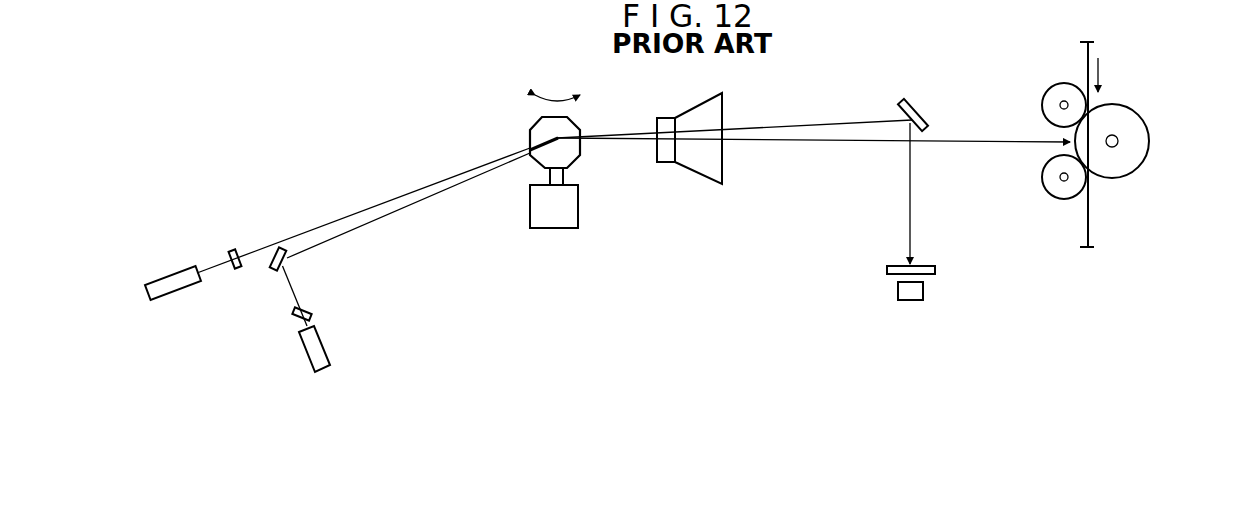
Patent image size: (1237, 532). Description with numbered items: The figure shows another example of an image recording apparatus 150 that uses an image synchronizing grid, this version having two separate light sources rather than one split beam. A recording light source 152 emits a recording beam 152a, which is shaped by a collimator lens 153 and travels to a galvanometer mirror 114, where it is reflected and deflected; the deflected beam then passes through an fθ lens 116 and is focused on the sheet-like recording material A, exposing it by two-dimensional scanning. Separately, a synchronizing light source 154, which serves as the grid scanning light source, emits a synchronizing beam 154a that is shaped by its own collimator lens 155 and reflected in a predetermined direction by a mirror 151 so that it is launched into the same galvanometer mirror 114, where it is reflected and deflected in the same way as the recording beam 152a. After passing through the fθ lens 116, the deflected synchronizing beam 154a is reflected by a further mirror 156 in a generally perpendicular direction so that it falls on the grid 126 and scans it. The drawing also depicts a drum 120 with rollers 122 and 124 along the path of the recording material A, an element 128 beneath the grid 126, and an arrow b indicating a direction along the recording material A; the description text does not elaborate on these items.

The galvanometer mirror 114 is at (540, 130).
The fθ lens 116 is at (723, 105).
The drum 120 is at (1130, 160).
The feed roller 122 is at (1058, 91).
The feed roller 124 is at (1055, 193).
The grid 126 is at (937, 270).
The detector 128 is at (913, 293).
The image recording apparatus 150 is at (698, 208).
The mirror 151 is at (276, 273).
The recording light source 152 is at (174, 272).
The recording beam 152a is at (315, 228).
The collimator lens 153 is at (237, 270).
The synchronizing light source 154 is at (308, 368).
The synchronizing beam 154a is at (327, 241).
The collimator lens 155 is at (312, 311).
The mirror 156 is at (918, 112).
The sheet-like recording material A is at (1090, 212).
The feed direction b is at (1110, 73).